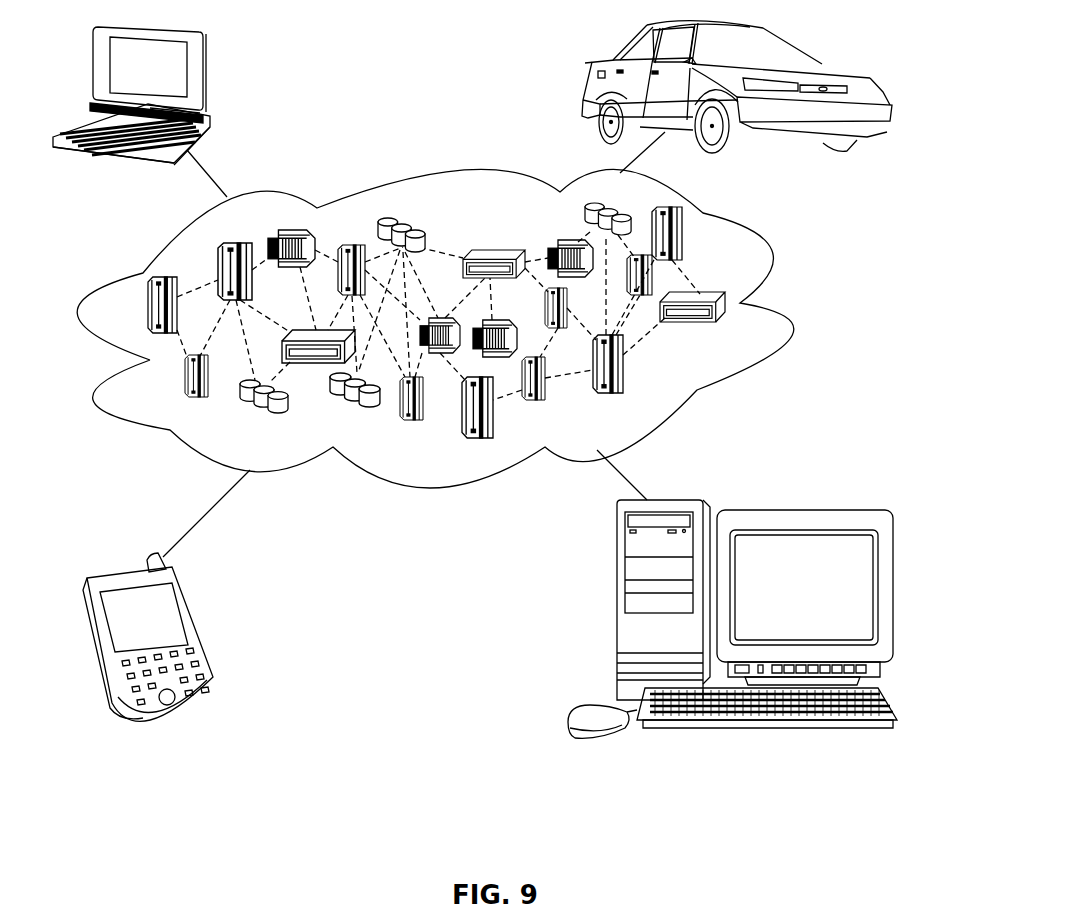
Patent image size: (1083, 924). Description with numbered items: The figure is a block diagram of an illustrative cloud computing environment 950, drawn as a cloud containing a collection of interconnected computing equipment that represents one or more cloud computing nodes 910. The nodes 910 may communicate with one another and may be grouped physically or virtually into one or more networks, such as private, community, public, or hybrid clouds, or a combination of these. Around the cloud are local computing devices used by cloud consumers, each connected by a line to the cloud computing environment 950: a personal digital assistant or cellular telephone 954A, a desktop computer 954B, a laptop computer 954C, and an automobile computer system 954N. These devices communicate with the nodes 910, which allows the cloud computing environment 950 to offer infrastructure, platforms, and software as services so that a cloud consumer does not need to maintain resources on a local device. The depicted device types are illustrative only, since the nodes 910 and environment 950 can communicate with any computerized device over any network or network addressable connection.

The laptop computer 954C is at (207, 75).
The automobile computer system 954N is at (583, 75).
The cloud computing environment 950 is at (768, 266).
The cloud computing nodes 910 is at (747, 328).
The personal digital assistant (PDA) or cellular telephone 954A is at (197, 627).
The desktop computer 954B is at (616, 612).